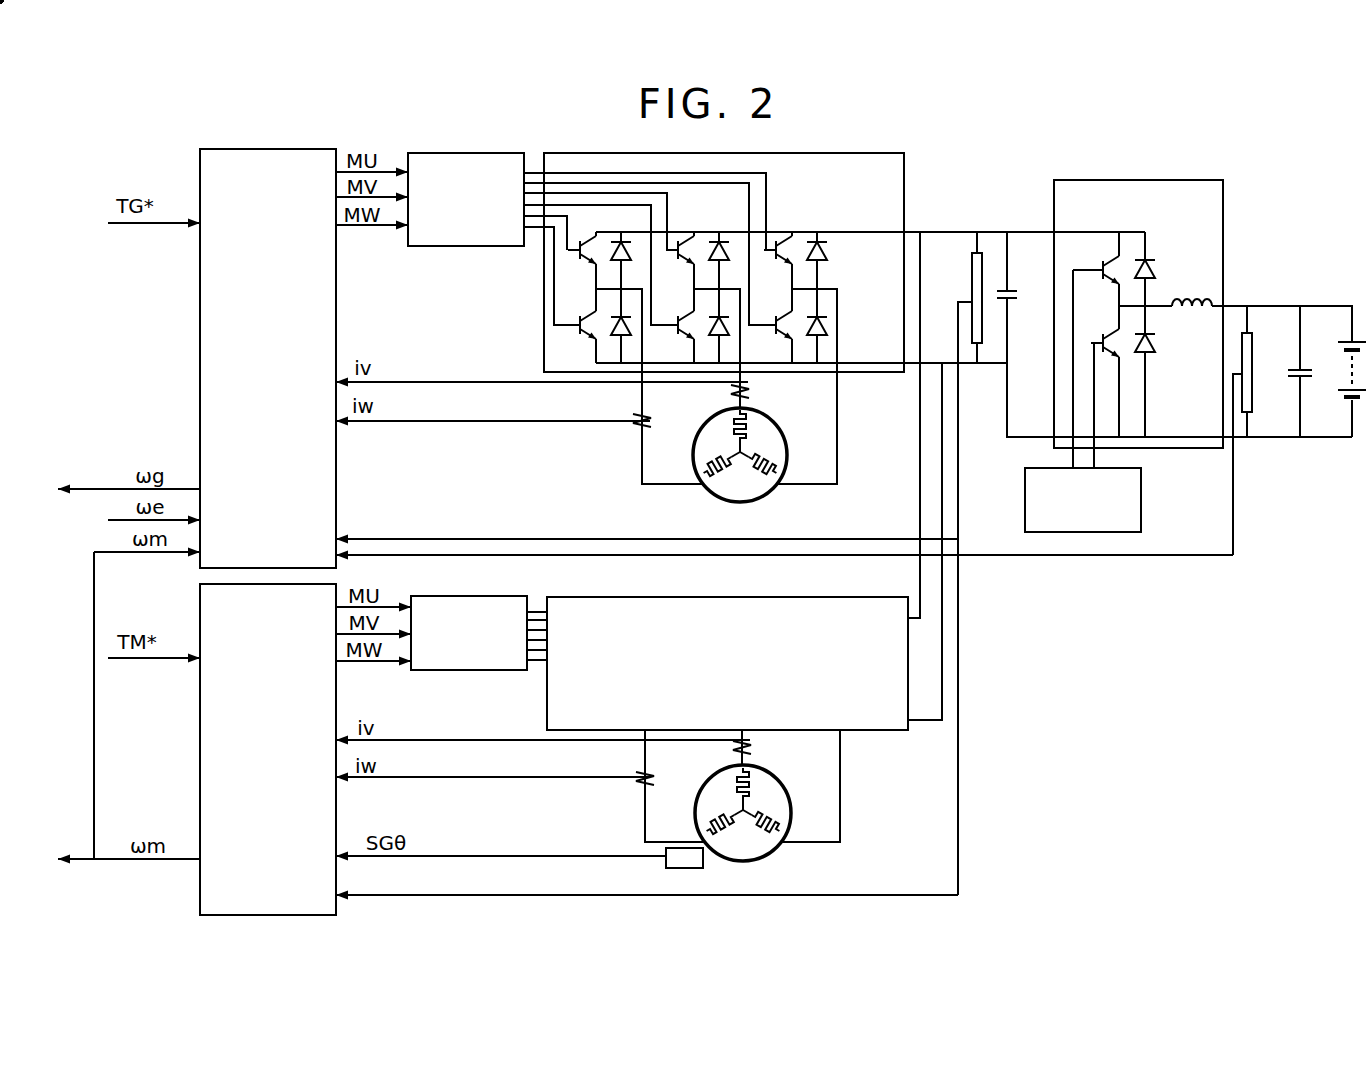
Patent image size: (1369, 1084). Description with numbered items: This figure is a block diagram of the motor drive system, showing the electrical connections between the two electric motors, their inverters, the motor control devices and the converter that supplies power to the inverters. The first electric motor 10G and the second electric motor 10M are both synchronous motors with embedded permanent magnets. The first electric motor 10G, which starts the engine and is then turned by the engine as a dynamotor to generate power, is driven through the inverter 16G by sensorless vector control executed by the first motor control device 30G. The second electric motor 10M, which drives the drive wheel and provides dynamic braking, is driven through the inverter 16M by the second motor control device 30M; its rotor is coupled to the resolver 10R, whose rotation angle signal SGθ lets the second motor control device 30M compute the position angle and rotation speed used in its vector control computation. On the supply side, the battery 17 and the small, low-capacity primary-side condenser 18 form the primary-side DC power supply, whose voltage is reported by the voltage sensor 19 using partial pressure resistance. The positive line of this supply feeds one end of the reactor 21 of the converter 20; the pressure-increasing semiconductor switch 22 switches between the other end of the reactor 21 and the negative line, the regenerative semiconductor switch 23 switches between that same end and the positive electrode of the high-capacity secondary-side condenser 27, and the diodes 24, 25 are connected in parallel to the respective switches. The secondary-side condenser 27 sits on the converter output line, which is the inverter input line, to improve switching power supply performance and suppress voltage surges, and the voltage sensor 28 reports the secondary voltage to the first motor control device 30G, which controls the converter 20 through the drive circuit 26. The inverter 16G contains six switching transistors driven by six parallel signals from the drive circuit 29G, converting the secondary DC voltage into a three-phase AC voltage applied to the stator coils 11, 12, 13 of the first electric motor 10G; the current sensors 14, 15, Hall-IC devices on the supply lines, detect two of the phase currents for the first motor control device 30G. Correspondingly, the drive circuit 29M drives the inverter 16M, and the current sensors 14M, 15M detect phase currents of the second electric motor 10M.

The first electric motor 10G is at (741, 456).
The second electric motor 10M is at (785, 782).
The resolver 10R is at (668, 863).
The stator coil 11 is at (730, 475).
The stator coil 12 is at (730, 432).
The stator coil 13 is at (768, 458).
The current sensor 14 is at (638, 430).
The current sensor 14M is at (636, 789).
The current sensor 15 is at (732, 393).
The current sensor 15M is at (732, 748).
The inverter 16G is at (798, 152).
The inverter 16M is at (800, 597).
The battery 17 is at (1340, 342).
The primary-side condenser 18 is at (1295, 375).
The voltage sensor 19 is at (1253, 352).
The converter 20 is at (641, 234).
The reactor 21 is at (1193, 292).
The pressure-increasing semiconductor switch 22 is at (1112, 328).
The regenerative semiconductor switch 23 is at (1100, 262).
The diode 24 is at (1153, 347).
The diode 25 is at (1153, 260).
The drive circuit 26 is at (1145, 493).
The secondary-side condenser 27 is at (1013, 288).
The voltage sensor 28 is at (972, 285).
The drive circuit 29G is at (437, 148).
The drive circuit 29M is at (441, 594).
The first motor control device 30G is at (200, 354).
The second motor control device 30M is at (201, 718).